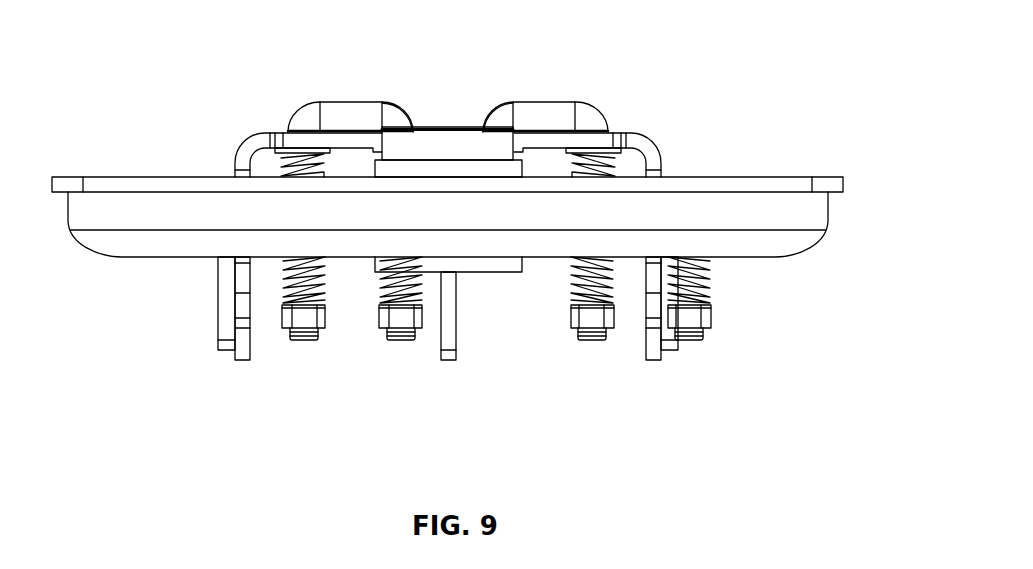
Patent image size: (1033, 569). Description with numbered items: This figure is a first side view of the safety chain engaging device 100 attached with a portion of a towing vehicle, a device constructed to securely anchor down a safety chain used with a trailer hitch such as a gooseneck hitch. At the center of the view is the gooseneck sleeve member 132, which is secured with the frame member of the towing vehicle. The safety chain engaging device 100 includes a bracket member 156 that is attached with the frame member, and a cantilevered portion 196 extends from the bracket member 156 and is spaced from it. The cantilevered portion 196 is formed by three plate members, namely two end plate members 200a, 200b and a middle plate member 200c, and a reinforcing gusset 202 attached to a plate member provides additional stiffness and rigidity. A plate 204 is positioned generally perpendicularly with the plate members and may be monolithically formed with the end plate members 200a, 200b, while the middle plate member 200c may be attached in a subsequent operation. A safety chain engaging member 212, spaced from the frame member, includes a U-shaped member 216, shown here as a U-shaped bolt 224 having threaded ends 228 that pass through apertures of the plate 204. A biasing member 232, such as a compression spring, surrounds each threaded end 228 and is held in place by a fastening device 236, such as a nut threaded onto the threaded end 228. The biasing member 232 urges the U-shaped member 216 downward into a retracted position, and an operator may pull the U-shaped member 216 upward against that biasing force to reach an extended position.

The safety chain engaging device 100 is at (740, 34).
The gooseneck sleeve member 132 is at (442, 140).
The bracket member 156 is at (742, 177).
The cantilevered portion 196 is at (218, 128).
The end plate member 200a is at (247, 356).
The end plate member 200b is at (652, 350).
The middle plate member 200c is at (448, 360).
The reinforcing gusset 202 is at (225, 318).
The plate 204 is at (652, 142).
The safety chain engaging member 212 is at (345, 100).
The U-shaped member 216 is at (297, 112).
The U-shaped bolt 224 is at (400, 102).
The threaded end 228 is at (302, 340).
The biasing member 232 is at (285, 270).
The fastening device 236 is at (325, 318).